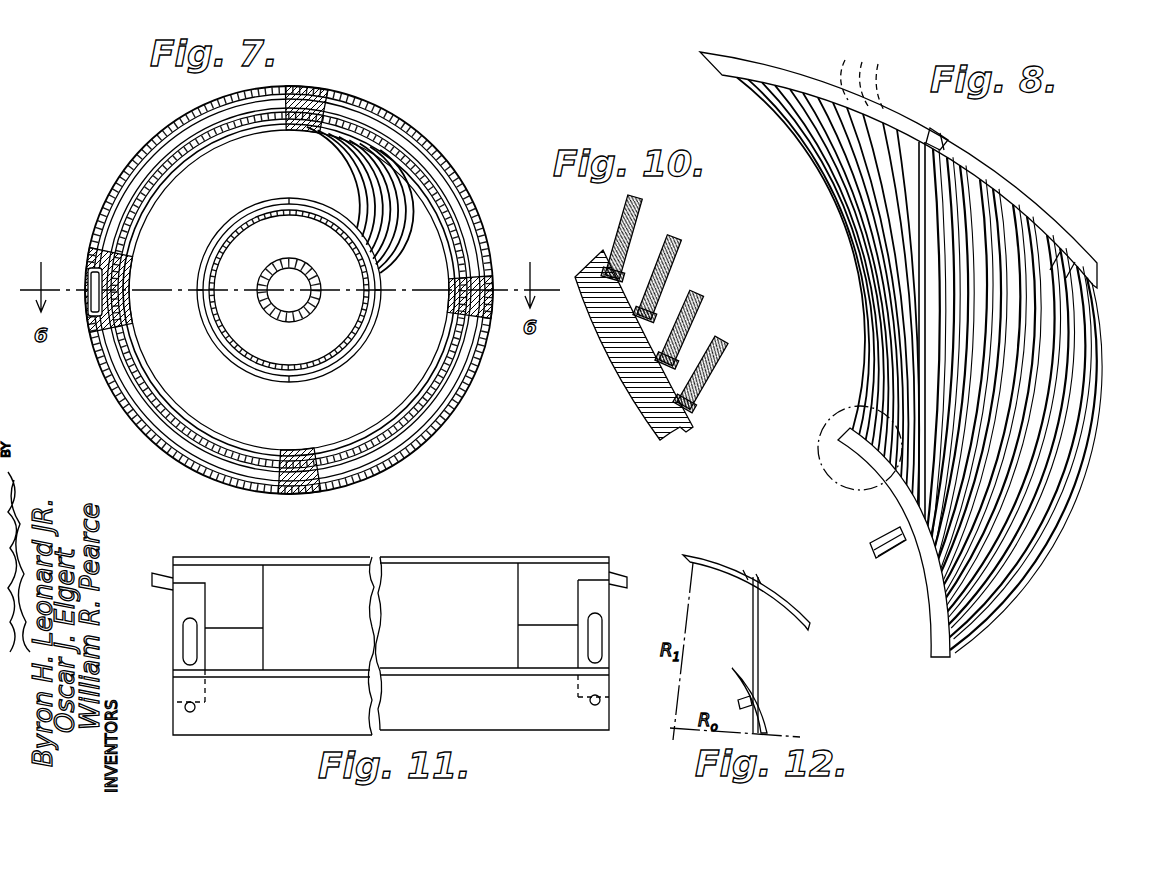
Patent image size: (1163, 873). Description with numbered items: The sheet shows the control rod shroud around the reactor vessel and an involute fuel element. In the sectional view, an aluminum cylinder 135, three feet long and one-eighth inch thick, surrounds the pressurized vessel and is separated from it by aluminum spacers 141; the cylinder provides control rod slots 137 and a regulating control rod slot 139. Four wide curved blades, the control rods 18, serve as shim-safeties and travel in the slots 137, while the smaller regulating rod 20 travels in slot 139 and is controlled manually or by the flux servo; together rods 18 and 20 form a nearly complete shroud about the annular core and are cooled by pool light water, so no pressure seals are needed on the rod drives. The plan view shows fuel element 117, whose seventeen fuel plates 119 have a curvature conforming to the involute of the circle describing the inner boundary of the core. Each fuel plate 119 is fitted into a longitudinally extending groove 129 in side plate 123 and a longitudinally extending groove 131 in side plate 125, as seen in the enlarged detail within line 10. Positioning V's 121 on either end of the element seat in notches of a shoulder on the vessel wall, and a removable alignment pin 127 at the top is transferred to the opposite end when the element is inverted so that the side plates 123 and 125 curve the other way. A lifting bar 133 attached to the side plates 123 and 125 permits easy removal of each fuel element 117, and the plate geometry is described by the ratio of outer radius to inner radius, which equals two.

In FIG. 8, the section line 10 is at (824, 486).
In FIG. 7, the control rods 18 is at (141, 167).
In FIG. 7, the regulating control rod 20 is at (90, 284).
In FIG. 8, the fuel element 117 is at (1105, 332).
In FIG. 8, the fuel plates 119 is at (1040, 586).
In FIG. 10, the fuel plates 119 is at (662, 254).
In FIG. 8, the positioning V's 121 is at (938, 140).
In FIG. 11, the positioning V's 121 is at (160, 580).
In FIG. 8, the side plate 123 is at (933, 622).
In FIG. 10, the side plate 123 is at (640, 360).
In FIG. 11, the side plate 123 is at (494, 712).
In FIG. 8, the side plate 125 is at (1024, 213).
In FIG. 11, the side plate 125 is at (554, 542).
In FIG. 8, the removable alignment pin 127 is at (878, 546).
In FIG. 11, the removable alignment pin 127 is at (195, 708).
In FIG. 10, the longitudinally extending groove 129 is at (605, 269).
In FIG. 8, the longitudinally extending groove 131 is at (870, 76).
In FIG. 8, the lifting bar 133 is at (920, 346).
In FIG. 11, the lifting bar 133 is at (182, 608).
In FIG. 7, the aluminum cylinder 135 is at (405, 452).
In FIG. 7, the control rod slots 137 is at (196, 100).
In FIG. 7, the regulating control rod slot 139 is at (112, 290).
In FIG. 7, the aluminum spacers 141 is at (301, 94).